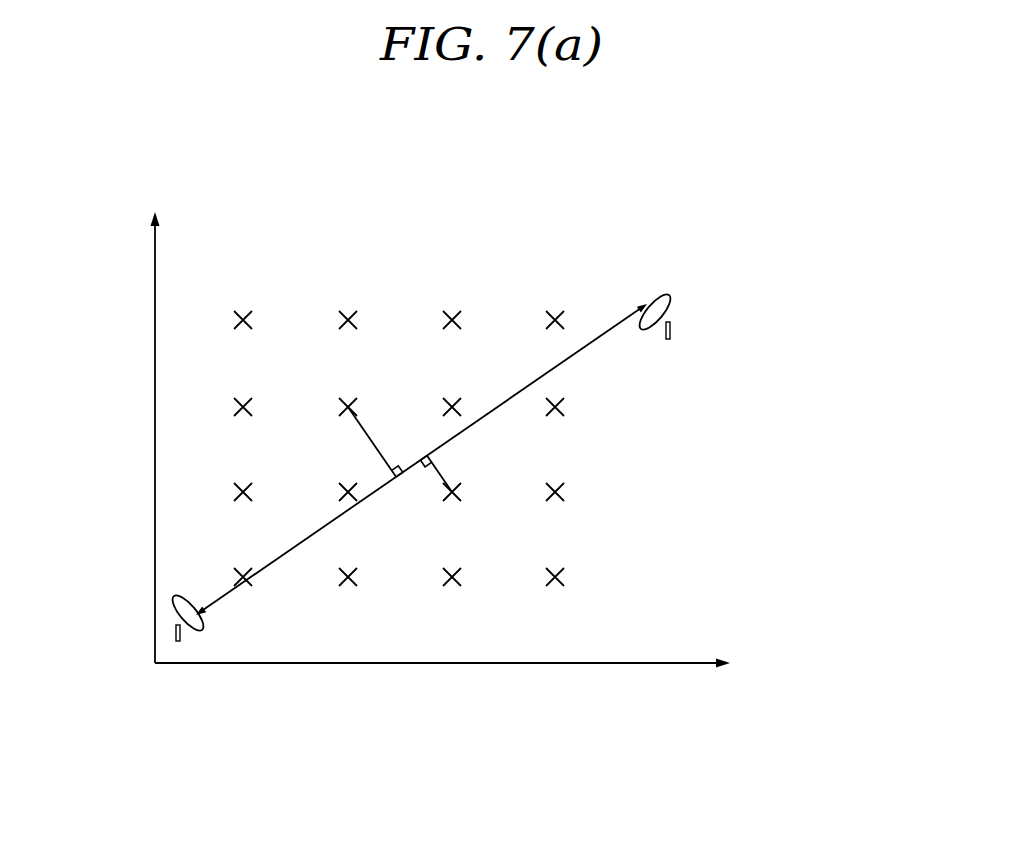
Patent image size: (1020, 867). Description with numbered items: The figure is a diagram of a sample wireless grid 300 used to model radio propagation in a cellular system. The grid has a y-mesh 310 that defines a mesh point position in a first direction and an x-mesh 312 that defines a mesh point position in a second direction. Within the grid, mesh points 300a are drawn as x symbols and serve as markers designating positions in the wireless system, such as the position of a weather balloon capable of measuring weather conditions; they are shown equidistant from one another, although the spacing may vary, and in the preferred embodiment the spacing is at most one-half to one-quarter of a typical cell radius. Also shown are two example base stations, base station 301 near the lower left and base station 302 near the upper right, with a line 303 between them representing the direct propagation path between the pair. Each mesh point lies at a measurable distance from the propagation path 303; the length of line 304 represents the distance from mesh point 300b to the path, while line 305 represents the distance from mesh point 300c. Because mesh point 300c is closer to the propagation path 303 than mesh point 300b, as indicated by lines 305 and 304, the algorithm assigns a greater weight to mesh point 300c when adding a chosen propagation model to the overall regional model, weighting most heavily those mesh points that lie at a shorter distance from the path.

The wireless grid 300 is at (418, 537).
The mesh point 300a is at (348, 316).
The mesh point 300b is at (348, 402).
The mesh point 300c is at (452, 497).
The base station 301 is at (206, 627).
The base station 302 is at (672, 306).
The direct propagation path 303 is at (600, 336).
The line 304 is at (372, 441).
The line 305 is at (440, 472).
The y-mesh 310 is at (99, 437).
The x-mesh 312 is at (442, 708).